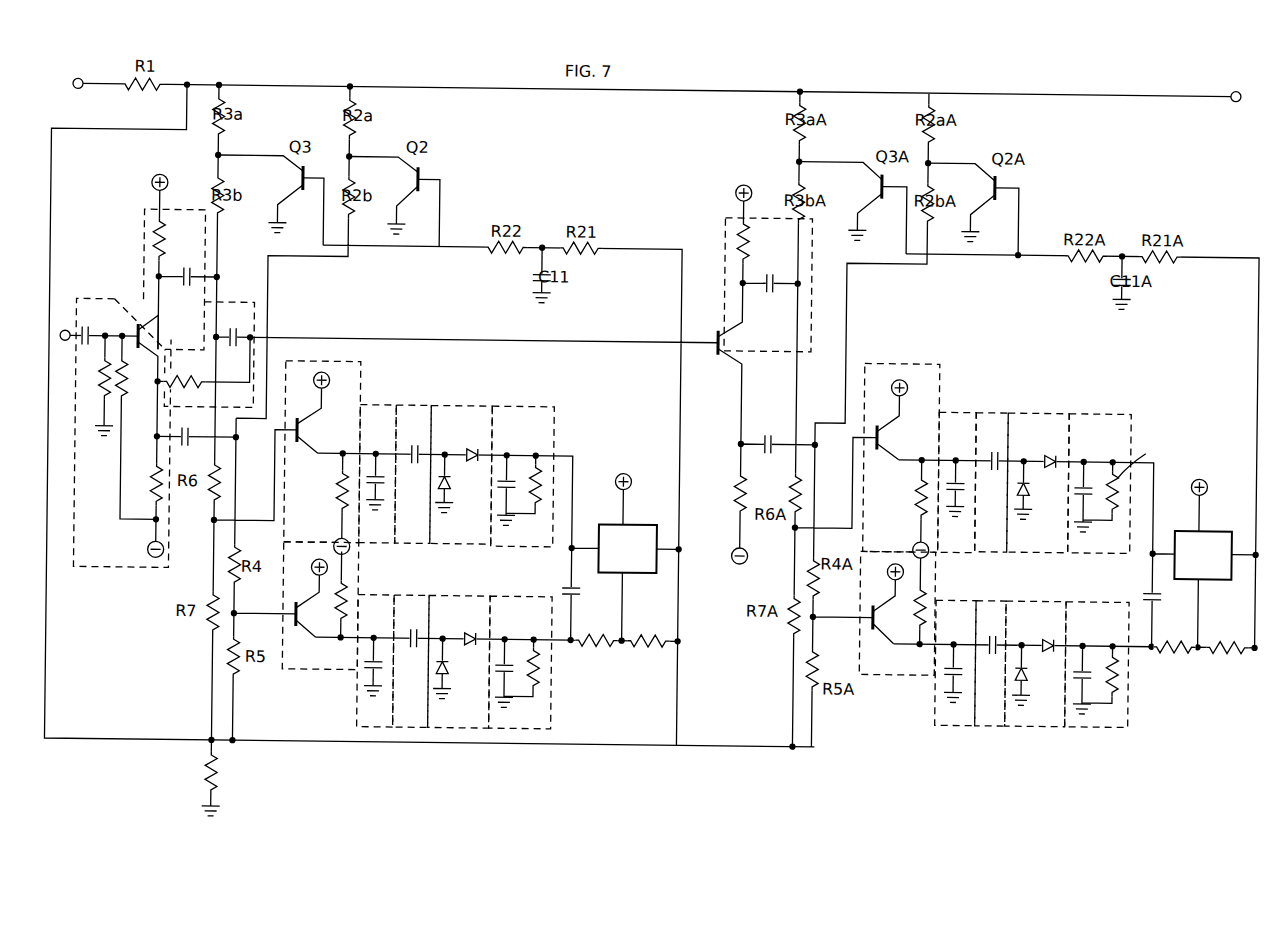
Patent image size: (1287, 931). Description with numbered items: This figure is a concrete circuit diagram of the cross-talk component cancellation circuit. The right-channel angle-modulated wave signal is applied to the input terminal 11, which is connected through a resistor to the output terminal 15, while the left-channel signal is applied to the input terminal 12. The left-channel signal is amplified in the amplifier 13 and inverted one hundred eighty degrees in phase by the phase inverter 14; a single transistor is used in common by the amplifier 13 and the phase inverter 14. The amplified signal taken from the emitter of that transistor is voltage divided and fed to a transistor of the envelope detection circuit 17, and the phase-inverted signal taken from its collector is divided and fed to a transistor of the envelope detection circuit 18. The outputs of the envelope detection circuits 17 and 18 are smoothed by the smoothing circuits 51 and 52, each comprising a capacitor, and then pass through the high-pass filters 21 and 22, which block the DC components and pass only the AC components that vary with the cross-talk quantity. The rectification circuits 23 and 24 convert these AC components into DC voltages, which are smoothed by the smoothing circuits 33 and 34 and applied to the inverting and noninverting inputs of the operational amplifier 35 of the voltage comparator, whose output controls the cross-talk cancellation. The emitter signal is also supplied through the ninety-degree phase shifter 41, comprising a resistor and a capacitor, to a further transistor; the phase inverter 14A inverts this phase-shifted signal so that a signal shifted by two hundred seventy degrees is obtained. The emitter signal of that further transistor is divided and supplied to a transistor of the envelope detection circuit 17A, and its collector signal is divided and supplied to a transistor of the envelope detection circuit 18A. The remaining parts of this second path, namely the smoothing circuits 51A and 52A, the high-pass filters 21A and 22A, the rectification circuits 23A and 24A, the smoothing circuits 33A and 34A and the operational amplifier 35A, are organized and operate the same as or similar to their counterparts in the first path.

The input terminal 11 is at (77, 81).
The output terminal 15 is at (1233, 80).
The input terminal 12 is at (67, 331).
The amplifier 13 is at (97, 569).
The phase inverter 14 is at (146, 210).
The 90-degree phase shifter 41 is at (244, 300).
The envelope detection circuit 18 is at (316, 360).
The smoothing circuit 52 is at (378, 403).
The high-pass filter 22 is at (417, 403).
The rectification circuit 24 is at (478, 403).
The smoothing circuit 34 is at (556, 430).
The operational amplifier 35 is at (645, 520).
The envelope detection circuit 17 is at (309, 668).
The smoothing circuit 51 is at (375, 725).
The high-pass filter 21 is at (404, 593).
The rectification circuit 23 is at (460, 725).
The smoothing circuit 33 is at (562, 722).
The phase inverter 14A is at (727, 212).
The envelope detection circuit 18A is at (898, 356).
The smoothing circuit 52A is at (955, 404).
The high pass filter 22A is at (979, 543).
The rectifier 24A is at (1043, 404).
The smoothing circuit 34A is at (1134, 404).
The amplifier 35A is at (1222, 520).
The envelope detection circuit 17A is at (882, 667).
The smoothing circuit 51A is at (957, 717).
The high pass filter 21A is at (996, 592).
The rectifier 23A is at (1062, 686).
The smoothing circuit 33A is at (1136, 705).